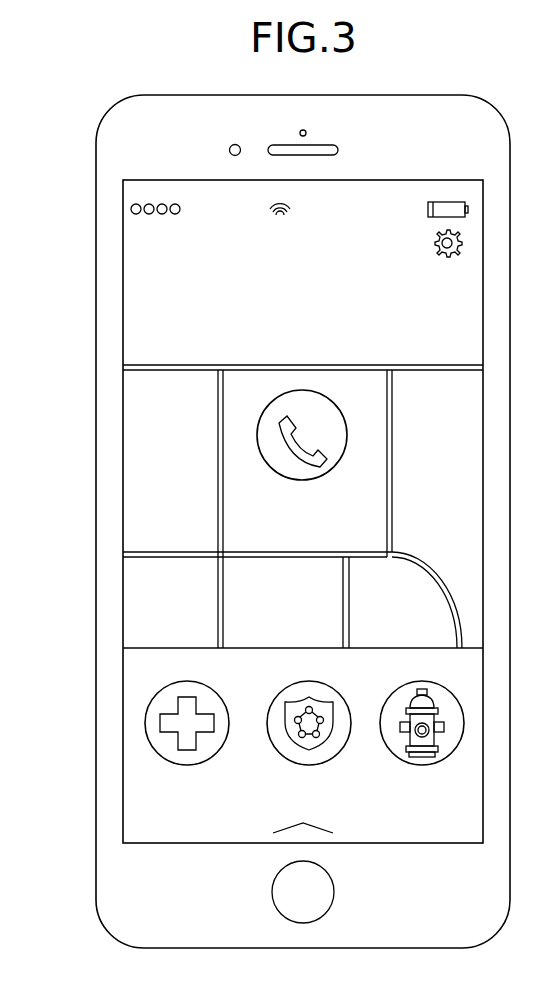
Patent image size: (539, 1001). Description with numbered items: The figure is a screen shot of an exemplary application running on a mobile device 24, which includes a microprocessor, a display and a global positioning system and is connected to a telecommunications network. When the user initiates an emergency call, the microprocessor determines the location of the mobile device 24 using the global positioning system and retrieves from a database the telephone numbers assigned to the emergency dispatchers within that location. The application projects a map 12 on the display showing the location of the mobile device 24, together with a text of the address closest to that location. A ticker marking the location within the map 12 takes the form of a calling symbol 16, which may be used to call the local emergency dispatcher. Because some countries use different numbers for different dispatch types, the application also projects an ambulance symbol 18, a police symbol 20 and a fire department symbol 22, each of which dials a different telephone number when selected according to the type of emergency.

The mobile device 24 is at (137, 132).
The map 12 is at (162, 474).
The calling symbol 16 is at (333, 470).
The ambulance symbol 18 is at (194, 681).
The police symbol 20 is at (316, 681).
The fire department symbol 22 is at (408, 681).